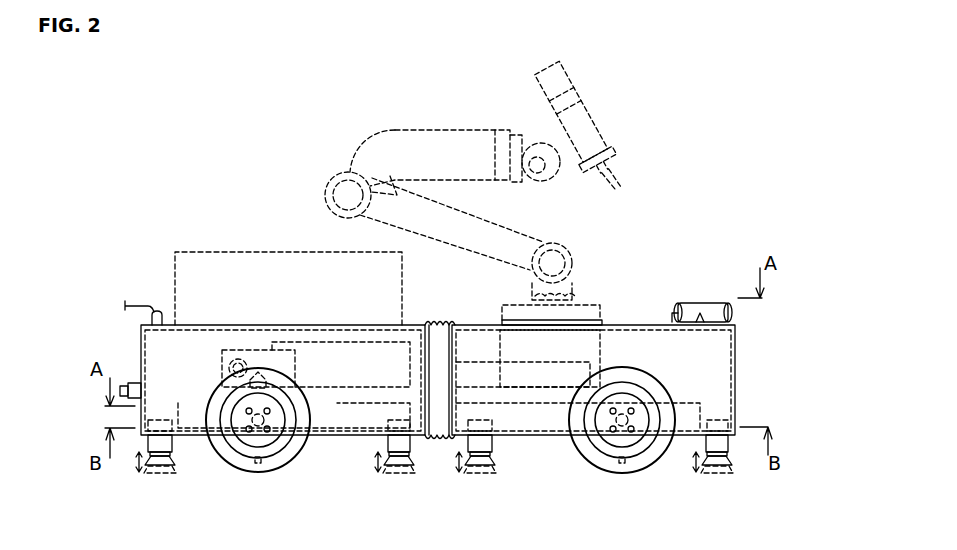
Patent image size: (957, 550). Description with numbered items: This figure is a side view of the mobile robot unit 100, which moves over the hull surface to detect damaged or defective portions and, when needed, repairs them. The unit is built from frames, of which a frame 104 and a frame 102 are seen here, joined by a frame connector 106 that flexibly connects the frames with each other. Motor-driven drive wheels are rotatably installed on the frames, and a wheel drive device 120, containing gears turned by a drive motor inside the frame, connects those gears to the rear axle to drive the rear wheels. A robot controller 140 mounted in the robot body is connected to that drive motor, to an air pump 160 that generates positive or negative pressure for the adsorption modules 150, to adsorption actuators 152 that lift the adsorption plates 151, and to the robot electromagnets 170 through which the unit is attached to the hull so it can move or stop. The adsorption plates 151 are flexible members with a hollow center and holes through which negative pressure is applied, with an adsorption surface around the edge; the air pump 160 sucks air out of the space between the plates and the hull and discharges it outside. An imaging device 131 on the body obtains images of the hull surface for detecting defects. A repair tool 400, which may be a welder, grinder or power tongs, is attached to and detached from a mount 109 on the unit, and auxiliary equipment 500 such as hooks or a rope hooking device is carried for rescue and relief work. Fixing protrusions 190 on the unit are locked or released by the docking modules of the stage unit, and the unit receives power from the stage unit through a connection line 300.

The mobile robot unit 100 is at (446, 67).
The frame 102 is at (736, 365).
The frame 104 is at (141, 343).
The frame connector 106 is at (438, 325).
The mount 109 is at (603, 322).
The wheel drive device 120 is at (255, 350).
The imaging device 131 is at (735, 313).
The robot controller 140 is at (340, 342).
The adsorption module 150 is at (178, 448).
The adsorption plate 151 is at (718, 463).
The adsorption actuator 152 is at (730, 446).
The air pump 160 is at (500, 325).
The robot electromagnet 170 is at (340, 430).
The fixing protrusion 190 is at (121, 389).
The connection line 300 is at (136, 299).
The repair tool 400 is at (614, 153).
The auxiliary equipment 500 is at (256, 246).